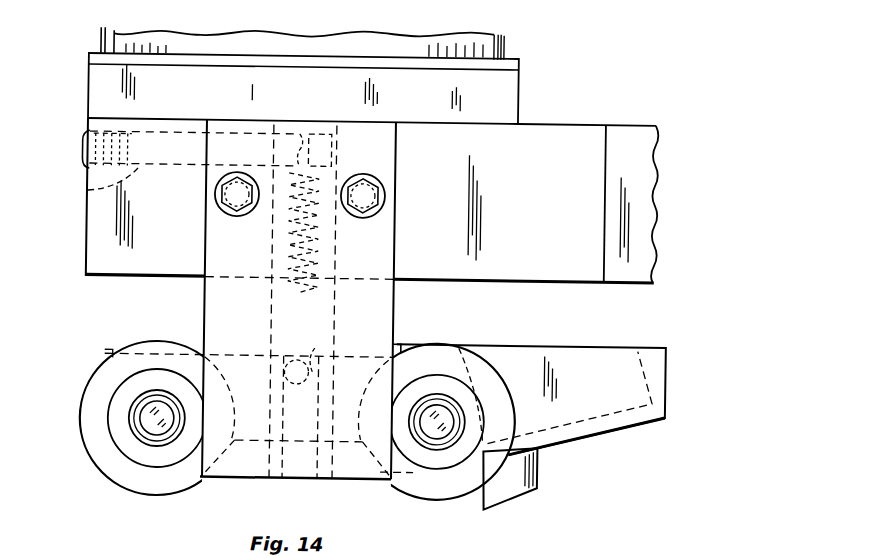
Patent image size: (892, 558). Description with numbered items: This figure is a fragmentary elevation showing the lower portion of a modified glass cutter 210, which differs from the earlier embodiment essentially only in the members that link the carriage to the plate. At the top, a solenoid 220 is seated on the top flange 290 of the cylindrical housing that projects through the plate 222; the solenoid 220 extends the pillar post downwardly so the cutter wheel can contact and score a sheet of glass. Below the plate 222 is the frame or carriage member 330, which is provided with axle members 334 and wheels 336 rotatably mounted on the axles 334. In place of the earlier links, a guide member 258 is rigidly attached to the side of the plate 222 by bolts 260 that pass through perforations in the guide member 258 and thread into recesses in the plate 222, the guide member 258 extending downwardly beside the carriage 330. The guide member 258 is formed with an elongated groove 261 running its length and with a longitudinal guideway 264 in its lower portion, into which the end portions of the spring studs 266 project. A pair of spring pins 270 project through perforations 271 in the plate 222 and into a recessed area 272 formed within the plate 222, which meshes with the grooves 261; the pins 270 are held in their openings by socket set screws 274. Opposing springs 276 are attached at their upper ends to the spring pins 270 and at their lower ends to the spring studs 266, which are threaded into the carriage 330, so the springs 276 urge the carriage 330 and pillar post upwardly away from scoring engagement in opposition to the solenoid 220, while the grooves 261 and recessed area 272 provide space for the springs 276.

The glass cutter 210 is at (647, 80).
The solenoid 220 is at (502, 39).
The plate 222 is at (124, 258).
The guide member 258 is at (245, 480).
The bolts 260 is at (217, 191).
The elongated grooves 261 is at (333, 306).
The longitudinal guideways 264 is at (315, 475).
The spring studs 266 is at (248, 396).
The spring pins 270 is at (175, 136).
The perforations 271 is at (88, 188).
The recessed area 272 is at (318, 132).
The socket set screws 274 is at (82, 148).
The springs 276 is at (325, 249).
The top flange 290 is at (508, 86).
The carriage member 330 is at (651, 412).
The axle members 334 is at (154, 417).
The wheels 336 is at (92, 390).